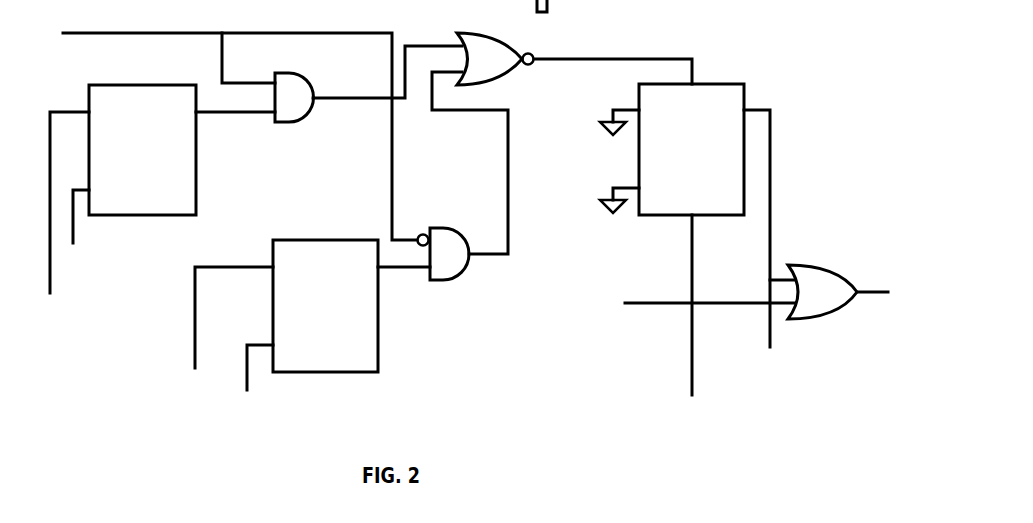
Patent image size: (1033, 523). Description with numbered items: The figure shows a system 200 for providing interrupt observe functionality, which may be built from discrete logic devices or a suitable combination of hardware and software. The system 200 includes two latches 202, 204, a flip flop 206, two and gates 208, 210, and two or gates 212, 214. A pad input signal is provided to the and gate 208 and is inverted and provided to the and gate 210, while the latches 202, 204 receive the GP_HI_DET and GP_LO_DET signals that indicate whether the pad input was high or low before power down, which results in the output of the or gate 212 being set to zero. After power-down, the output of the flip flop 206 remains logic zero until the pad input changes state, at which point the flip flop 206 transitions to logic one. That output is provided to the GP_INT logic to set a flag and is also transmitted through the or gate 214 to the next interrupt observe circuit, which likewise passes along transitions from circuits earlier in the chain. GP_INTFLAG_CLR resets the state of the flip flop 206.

The system 200 is at (457, 251).
The latch 202 is at (161, 160).
The latch 204 is at (344, 315).
The flip flop 206 is at (710, 160).
The and gate 208 is at (306, 107).
The and gate 210 is at (460, 260).
The or gate 212 is at (510, 70).
The or gate 214 is at (845, 303).